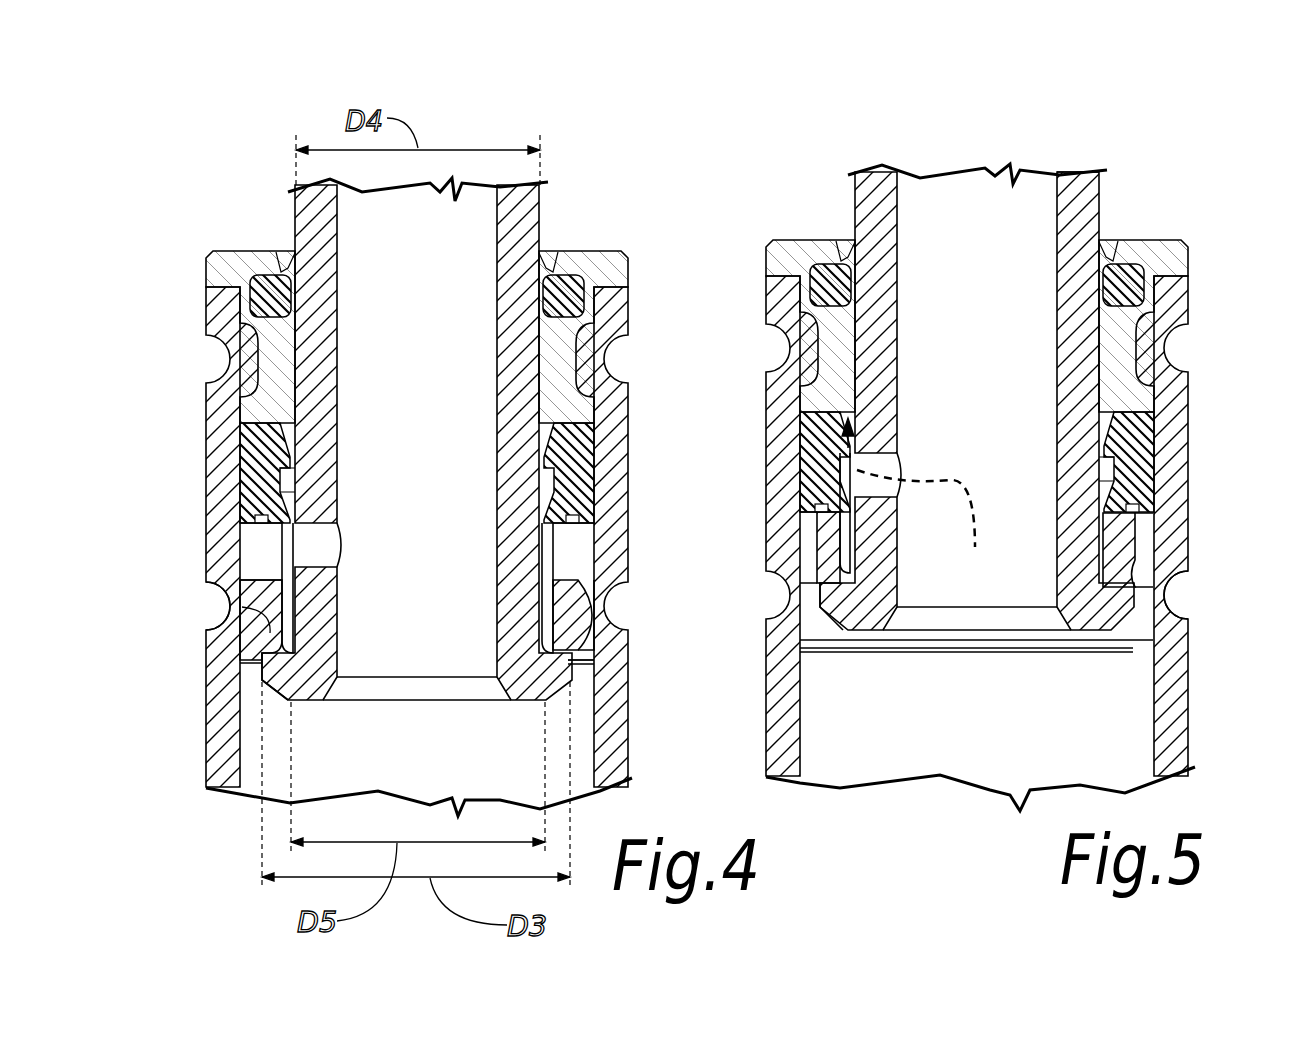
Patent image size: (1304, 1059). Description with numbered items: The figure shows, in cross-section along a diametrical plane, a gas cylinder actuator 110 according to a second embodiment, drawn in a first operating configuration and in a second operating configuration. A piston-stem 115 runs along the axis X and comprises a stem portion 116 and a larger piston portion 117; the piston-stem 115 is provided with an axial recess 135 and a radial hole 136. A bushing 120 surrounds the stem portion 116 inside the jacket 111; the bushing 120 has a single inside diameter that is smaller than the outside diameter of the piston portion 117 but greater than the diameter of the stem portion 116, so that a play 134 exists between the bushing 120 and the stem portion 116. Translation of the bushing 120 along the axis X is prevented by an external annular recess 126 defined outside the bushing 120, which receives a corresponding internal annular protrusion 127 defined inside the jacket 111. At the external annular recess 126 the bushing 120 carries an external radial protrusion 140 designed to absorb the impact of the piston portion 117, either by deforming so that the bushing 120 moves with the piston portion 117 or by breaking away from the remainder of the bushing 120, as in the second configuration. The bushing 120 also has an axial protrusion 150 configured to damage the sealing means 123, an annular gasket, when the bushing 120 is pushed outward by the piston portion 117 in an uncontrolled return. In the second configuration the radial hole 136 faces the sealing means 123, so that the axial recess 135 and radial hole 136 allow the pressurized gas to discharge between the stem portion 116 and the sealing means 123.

In FIG. 4, the gas cylinder actuator 110 is at (590, 193).
In FIG. 5, the gas cylinder actuator 110 is at (1170, 166).
In FIG. 4, the jacket 111 is at (623, 677).
In FIG. 5, the piston-stem 115 is at (1077, 177).
In FIG. 4, the stem portion 116 is at (297, 200).
In FIG. 5, the stem portion 116 is at (865, 208).
In FIG. 4, the piston portion 117 is at (262, 681).
In FIG. 5, the piston portion 117 is at (803, 635).
In FIG. 4, the bushing 120 is at (583, 610).
In FIG. 5, the bushing 120 is at (1138, 547).
In FIG. 4, the sealing means 123 is at (253, 443).
In FIG. 5, the sealing means 123 is at (810, 448).
In FIG. 4, the external annular recess 126 is at (237, 644).
In FIG. 5, the external annular recess 126 is at (967, 549).
In FIG. 4, the internal annular protrusion 127 is at (230, 610).
In FIG. 5, the internal annular protrusion 127 is at (1150, 593).
In FIG. 4, the play 134 is at (565, 560).
In FIG. 5, the axial recess 135 is at (988, 230).
In FIG. 4, the radial hole 136 is at (323, 541).
In FIG. 5, the radial hole 136 is at (848, 447).
In FIG. 4, the external radial protrusion 140 is at (597, 640).
In FIG. 5, the external radial protrusion 140 is at (1143, 635).
In FIG. 4, the axial protrusion 150 is at (282, 541).
In FIG. 5, the axial protrusion 150 is at (1107, 475).